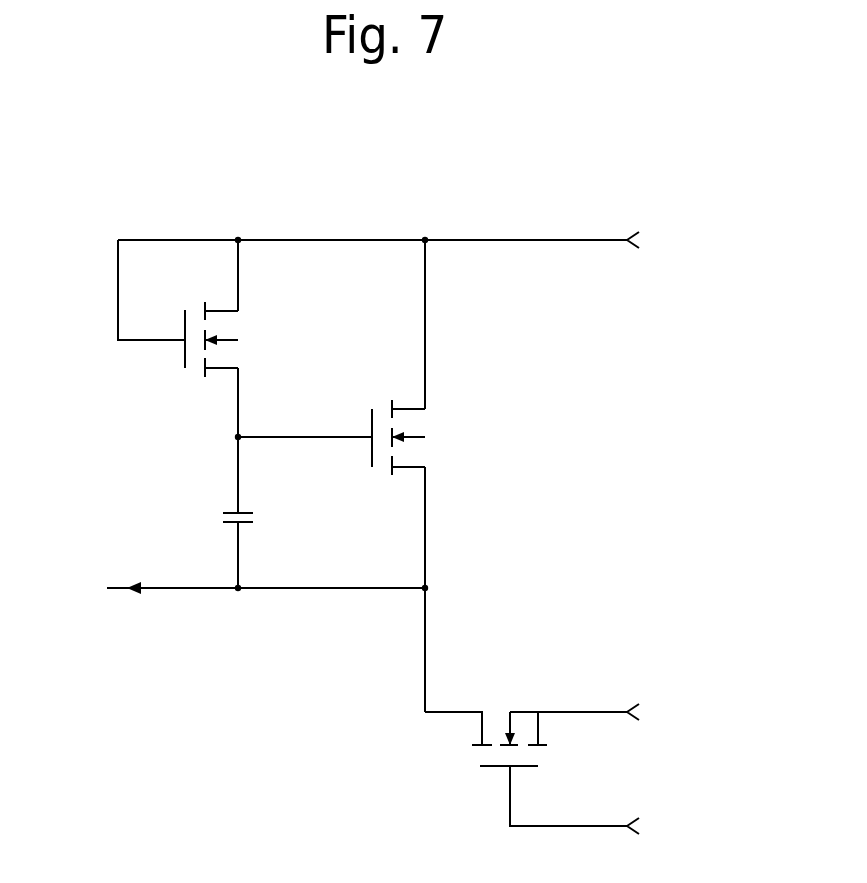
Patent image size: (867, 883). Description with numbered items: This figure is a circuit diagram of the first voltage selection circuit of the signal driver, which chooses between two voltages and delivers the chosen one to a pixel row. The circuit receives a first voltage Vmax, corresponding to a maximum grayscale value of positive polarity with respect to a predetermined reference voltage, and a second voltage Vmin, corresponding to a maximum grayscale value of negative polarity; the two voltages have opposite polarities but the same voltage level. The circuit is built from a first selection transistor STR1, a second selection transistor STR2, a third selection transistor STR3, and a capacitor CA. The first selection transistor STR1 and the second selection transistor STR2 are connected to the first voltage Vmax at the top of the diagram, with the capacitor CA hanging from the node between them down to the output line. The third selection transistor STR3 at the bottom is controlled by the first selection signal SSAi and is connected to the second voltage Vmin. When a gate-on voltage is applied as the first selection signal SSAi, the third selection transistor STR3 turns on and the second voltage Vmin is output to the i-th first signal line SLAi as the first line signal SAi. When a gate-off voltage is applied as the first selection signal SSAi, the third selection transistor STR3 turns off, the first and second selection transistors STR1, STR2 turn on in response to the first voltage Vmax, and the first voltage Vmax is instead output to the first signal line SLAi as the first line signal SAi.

The first selection transistor STR1 is at (204, 338).
The second selection transistor STR2 is at (357, 476).
The third selection transistor STR3 is at (526, 754).
The capacitor CA is at (253, 512).
The first line signal SAi is at (266, 580).
The i-th first signal line SLAi is at (83, 590).
The first voltage Vmax is at (402, 243).
The second voltage Vmin is at (654, 715).
The first selection signal SSAi is at (656, 828).